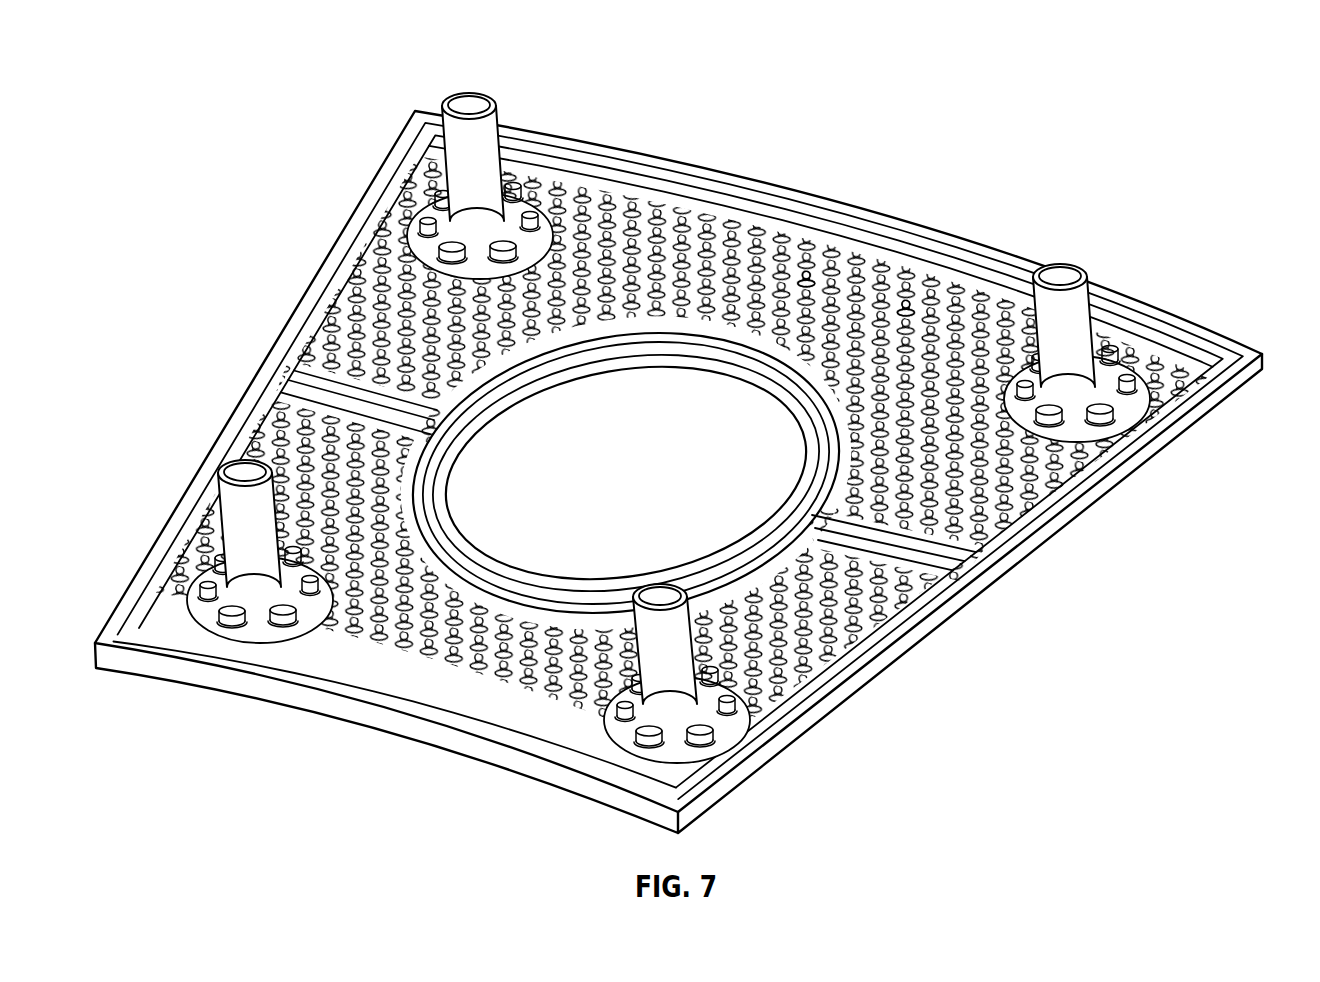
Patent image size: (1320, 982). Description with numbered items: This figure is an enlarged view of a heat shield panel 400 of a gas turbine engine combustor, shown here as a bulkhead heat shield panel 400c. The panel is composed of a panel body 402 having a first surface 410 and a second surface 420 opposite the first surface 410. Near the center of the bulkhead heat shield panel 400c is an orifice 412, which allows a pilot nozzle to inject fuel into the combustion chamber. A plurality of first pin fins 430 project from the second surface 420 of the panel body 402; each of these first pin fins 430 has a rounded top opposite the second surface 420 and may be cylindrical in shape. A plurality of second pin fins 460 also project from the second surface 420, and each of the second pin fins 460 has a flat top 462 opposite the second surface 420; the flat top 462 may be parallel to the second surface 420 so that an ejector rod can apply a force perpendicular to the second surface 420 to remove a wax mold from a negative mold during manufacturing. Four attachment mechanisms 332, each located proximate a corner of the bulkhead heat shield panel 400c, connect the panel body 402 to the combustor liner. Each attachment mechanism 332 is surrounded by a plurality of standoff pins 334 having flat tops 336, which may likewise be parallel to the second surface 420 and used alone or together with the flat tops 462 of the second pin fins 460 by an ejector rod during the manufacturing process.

The heat shield panel 400 is at (180, 60).
The bulkhead heat shield panel 400c is at (252, 145).
The panel body 402 is at (957, 310).
The first surface 410 is at (493, 769).
The orifice 412 is at (518, 567).
The second surface 420 is at (702, 233).
The first pin fins 430 is at (906, 304).
The second pin fins 460 is at (800, 275).
The flat top 462 is at (807, 275).
The attachment mechanism 332 is at (467, 103).
The standoff pins 334 is at (1150, 394).
The flat top 336 is at (1128, 376).